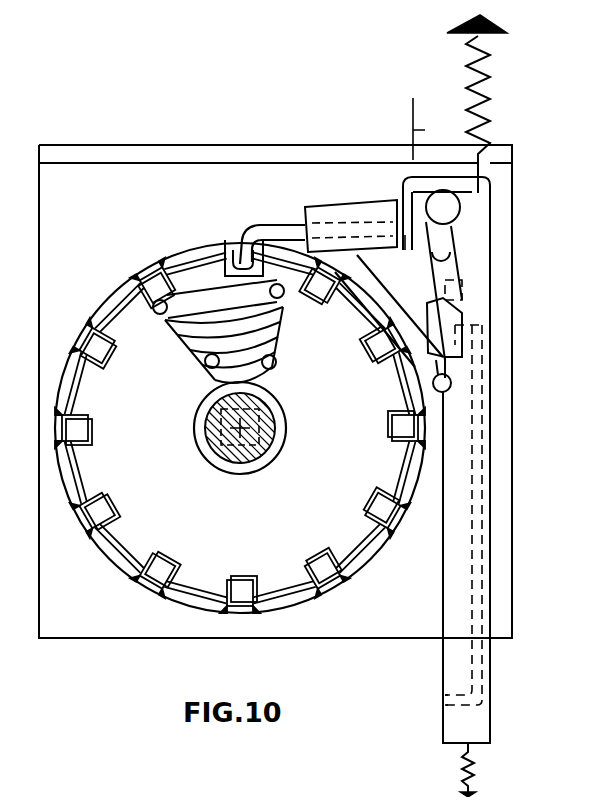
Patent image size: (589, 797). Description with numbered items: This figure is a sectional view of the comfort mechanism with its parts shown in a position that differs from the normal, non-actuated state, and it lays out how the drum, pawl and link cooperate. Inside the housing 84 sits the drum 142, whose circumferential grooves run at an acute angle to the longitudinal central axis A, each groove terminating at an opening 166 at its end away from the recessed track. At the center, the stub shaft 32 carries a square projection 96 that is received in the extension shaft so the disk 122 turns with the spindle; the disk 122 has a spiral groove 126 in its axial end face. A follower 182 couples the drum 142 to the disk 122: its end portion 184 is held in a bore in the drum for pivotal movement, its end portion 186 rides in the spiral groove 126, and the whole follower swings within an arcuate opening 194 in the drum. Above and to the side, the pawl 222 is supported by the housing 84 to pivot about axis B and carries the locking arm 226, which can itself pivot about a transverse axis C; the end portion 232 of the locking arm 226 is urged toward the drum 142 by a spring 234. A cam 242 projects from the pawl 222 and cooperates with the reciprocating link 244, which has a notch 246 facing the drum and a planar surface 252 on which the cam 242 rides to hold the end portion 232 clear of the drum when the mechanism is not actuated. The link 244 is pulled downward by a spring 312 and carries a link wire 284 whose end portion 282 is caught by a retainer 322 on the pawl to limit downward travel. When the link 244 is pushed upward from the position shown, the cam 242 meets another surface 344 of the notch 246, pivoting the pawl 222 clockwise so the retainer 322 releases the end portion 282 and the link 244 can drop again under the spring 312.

The housing 84 is at (50, 152).
The drum 142 is at (362, 558).
The opening 166 is at (217, 243).
The end portion of the locking arm 232 is at (238, 248).
The locking arm 226 is at (265, 226).
The pawl 222 is at (357, 204).
The axis C is at (428, 124).
The spring 234 is at (475, 62).
The axis B is at (460, 204).
The planar surface 252 is at (445, 260).
The notch 246 is at (440, 290).
The cam 242 is at (452, 312).
The end portion of the link wire 282 is at (483, 325).
The retainer 322 is at (455, 343).
The surface of the notch 344 is at (444, 386).
The link wire 284 is at (478, 529).
The link 244 is at (465, 676).
The spring 312 is at (472, 763).
The stub shaft 32 is at (262, 441).
The square projection 96 is at (253, 474).
The longitudinal central axis A is at (240, 428).
The follower 182 is at (228, 302).
The end portion of the follower 184 is at (162, 316).
The end portion of the follower 186 is at (279, 299).
The disk 122 is at (276, 341).
The spiral groove 126 is at (277, 370).
The arcuate opening 194 is at (222, 360).